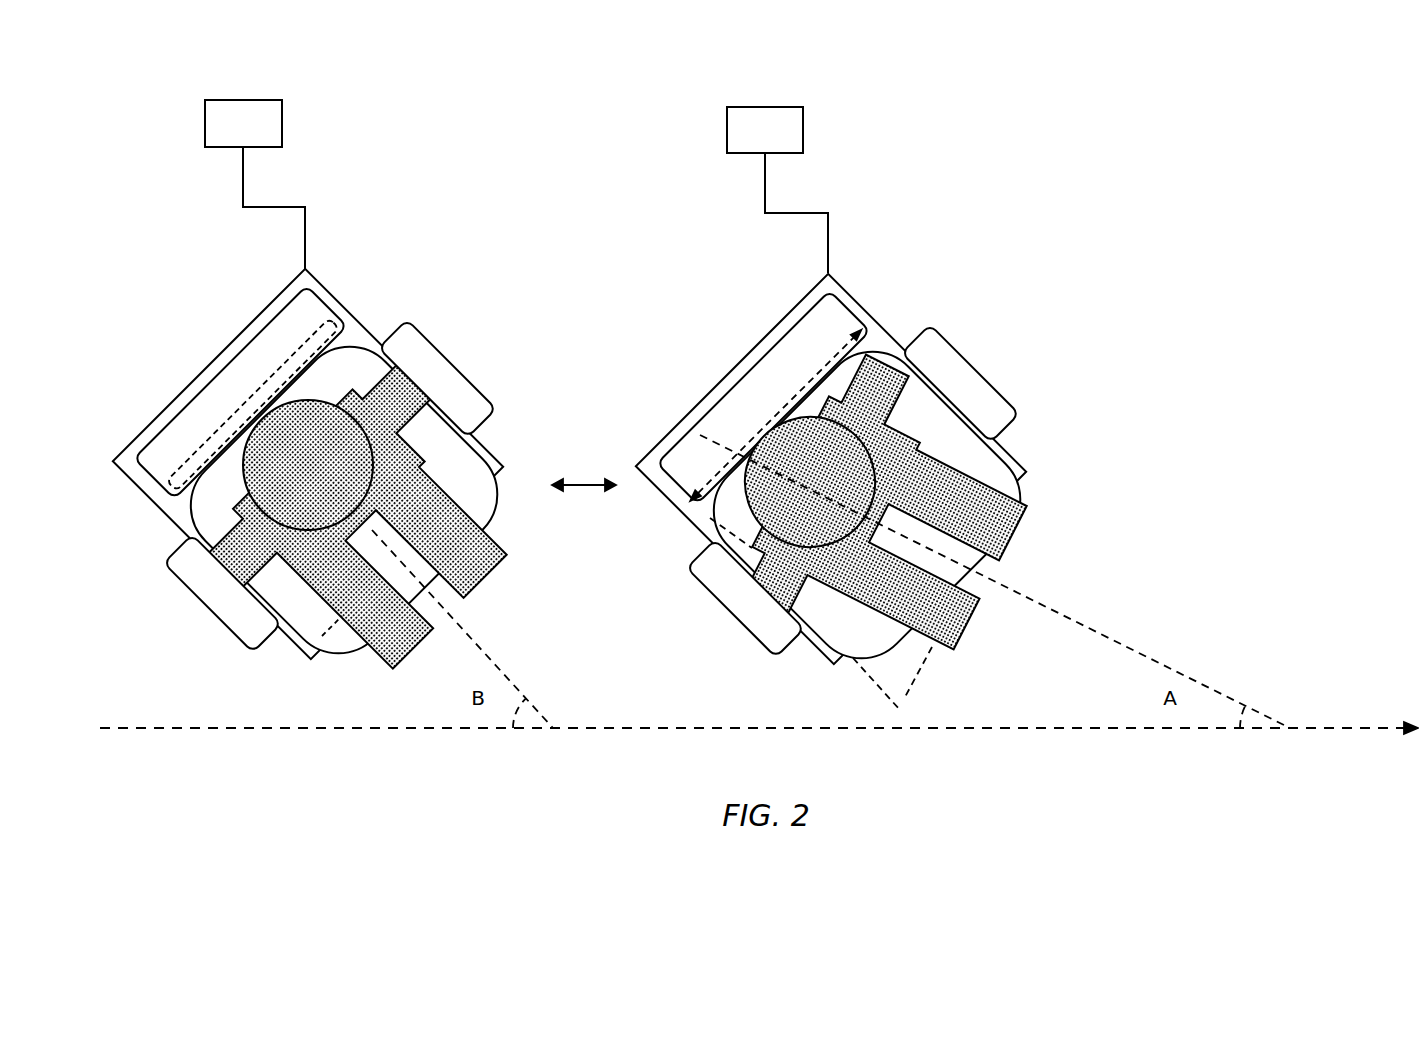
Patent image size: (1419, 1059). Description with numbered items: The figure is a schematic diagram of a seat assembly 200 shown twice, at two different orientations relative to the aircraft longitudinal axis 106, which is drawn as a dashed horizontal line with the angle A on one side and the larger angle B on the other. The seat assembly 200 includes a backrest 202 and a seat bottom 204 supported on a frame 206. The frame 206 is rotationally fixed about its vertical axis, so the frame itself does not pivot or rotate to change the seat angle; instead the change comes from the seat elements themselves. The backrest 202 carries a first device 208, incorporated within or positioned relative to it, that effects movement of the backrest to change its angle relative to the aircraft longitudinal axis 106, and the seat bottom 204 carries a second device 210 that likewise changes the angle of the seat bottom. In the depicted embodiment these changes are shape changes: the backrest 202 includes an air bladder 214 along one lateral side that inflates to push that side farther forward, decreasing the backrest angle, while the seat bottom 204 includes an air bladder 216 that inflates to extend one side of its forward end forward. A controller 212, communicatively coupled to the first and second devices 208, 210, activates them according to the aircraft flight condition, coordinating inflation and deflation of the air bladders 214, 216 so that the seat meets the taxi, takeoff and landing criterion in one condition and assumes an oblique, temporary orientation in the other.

The aircraft longitudinal axis 106 is at (167, 728).
The seat assembly 200 is at (452, 224).
The backrest 202 is at (322, 283).
The seat bottom 204 is at (493, 452).
The frame 206 is at (257, 317).
The first device 208 is at (190, 453).
The second device 210 is at (342, 640).
The controller 212 is at (226, 135).
The air bladder 214 is at (262, 402).
The air bladder 216 is at (332, 643).